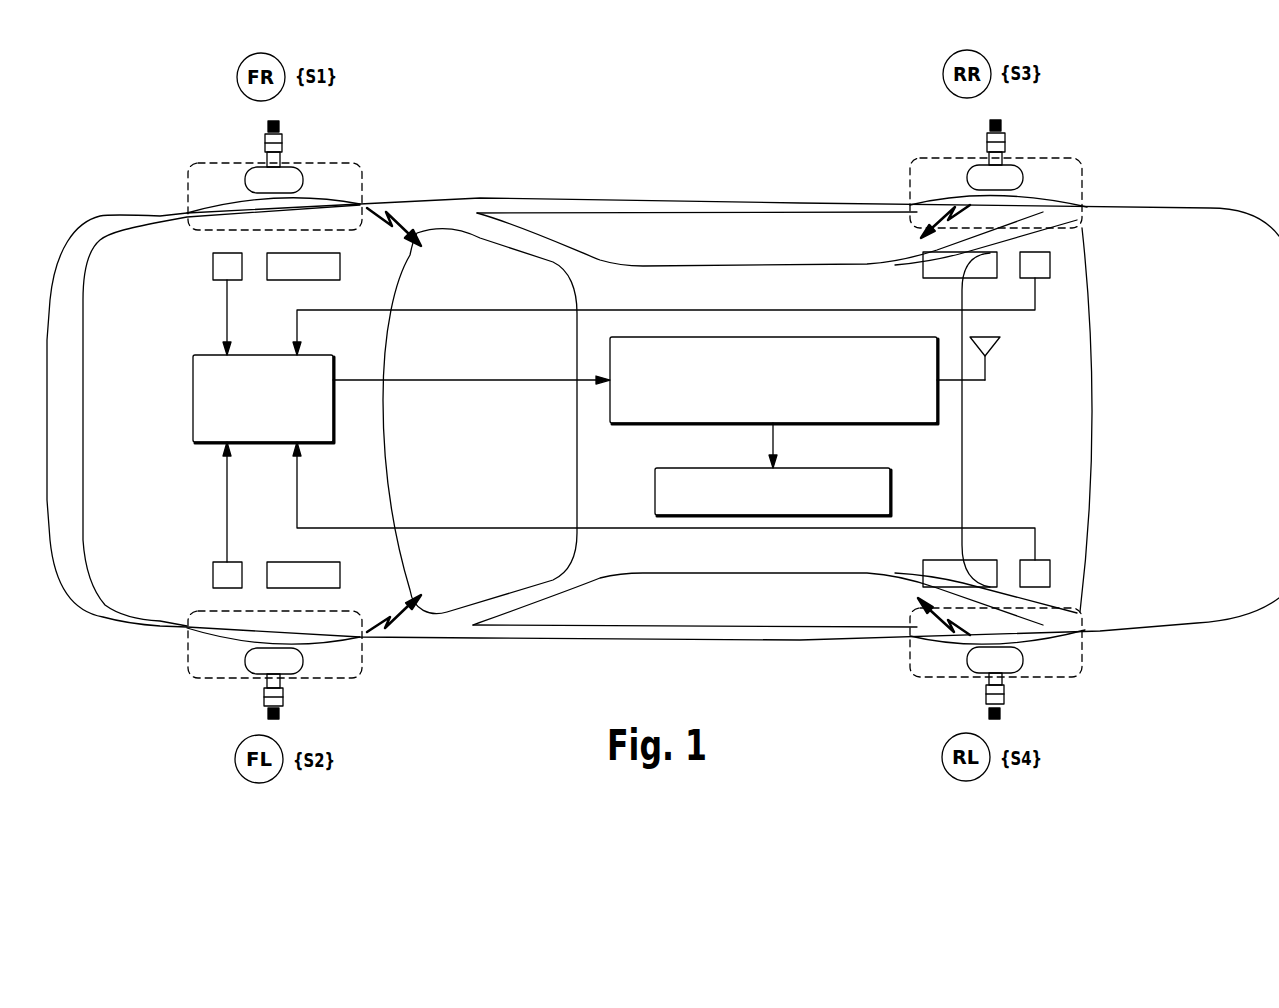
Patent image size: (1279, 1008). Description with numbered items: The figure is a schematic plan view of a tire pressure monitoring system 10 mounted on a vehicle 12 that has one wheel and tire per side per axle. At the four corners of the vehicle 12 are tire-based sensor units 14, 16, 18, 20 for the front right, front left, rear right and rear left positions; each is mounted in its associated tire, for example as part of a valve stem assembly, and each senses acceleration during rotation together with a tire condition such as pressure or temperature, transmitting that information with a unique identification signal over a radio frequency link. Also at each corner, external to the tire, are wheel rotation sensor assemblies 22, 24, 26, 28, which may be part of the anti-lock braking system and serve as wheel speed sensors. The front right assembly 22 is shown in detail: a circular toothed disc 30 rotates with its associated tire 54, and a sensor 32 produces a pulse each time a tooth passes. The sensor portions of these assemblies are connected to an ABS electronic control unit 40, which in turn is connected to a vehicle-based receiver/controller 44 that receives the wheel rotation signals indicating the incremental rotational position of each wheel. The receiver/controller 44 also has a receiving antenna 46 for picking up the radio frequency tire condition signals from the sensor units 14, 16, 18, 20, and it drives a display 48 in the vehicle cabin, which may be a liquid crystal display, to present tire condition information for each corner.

The tire pressure monitoring system 10 is at (1138, 68).
The vehicle 12 is at (1213, 200).
The tire-based sensor unit 14 is at (280, 150).
The tire-based sensor unit 16 is at (253, 660).
The tire-based sensor unit 18 is at (1020, 180).
The tire-based sensor unit 20 is at (1013, 660).
The wheel rotation sensor assembly 22 is at (226, 180).
The wheel rotation sensor assembly 24 is at (178, 609).
The wheel rotation sensor assembly 26 is at (1062, 332).
The wheel rotation sensor assembly 28 is at (1068, 530).
The toothed disc 30 is at (307, 280).
The sensor 32 is at (213, 267).
The ABS electronic control unit 40 is at (193, 380).
The vehicle-based receiver/controller 44 is at (938, 400).
The receiving antenna 46 is at (1000, 343).
The display 48 is at (893, 497).
The tire 54 is at (362, 172).